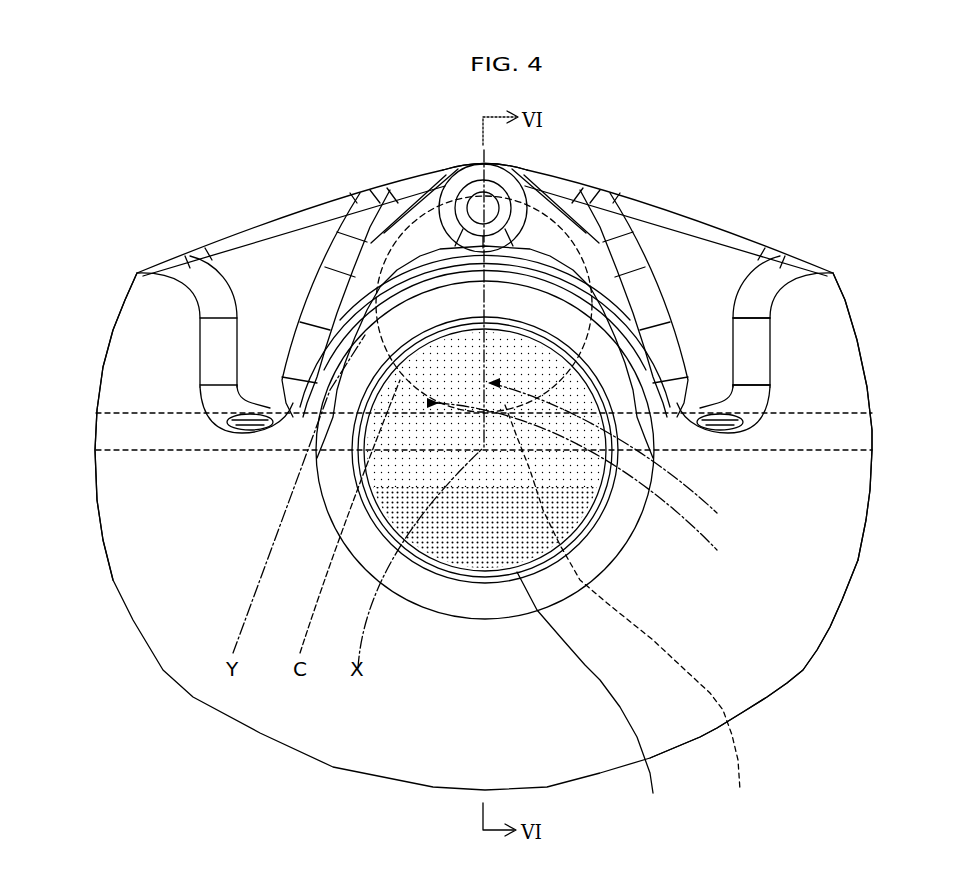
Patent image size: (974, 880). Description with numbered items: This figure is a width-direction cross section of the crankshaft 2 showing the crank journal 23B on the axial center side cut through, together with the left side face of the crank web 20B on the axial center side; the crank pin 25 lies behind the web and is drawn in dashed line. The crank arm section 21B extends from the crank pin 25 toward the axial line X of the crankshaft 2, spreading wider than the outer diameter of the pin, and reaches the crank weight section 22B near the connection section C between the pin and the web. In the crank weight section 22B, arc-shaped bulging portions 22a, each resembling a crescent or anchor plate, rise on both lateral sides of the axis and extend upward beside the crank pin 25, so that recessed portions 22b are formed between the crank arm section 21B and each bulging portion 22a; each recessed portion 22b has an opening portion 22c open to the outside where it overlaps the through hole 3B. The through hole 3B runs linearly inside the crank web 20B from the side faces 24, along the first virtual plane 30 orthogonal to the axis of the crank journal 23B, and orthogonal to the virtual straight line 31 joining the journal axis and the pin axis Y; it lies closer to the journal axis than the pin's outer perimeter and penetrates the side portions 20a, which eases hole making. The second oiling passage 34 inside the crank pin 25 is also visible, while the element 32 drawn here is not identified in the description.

The crankshaft 2 is at (600, 170).
The through hole 3B is at (517, 439).
The crank web 20B is at (245, 511).
The side portions 20a is at (868, 513).
The crank arm section 21B is at (653, 283).
The crank weight section 22B is at (193, 697).
The bulging portions 22a is at (843, 292).
The recessed portions 22b is at (710, 382).
The opening portion 22c is at (833, 398).
The crank journal 23B is at (599, 703).
The side faces 24 is at (95, 458).
The crank pin 25 is at (628, 609).
The first virtual plane 30 is at (423, 332).
The virtual straight line 31 is at (615, 452).
The rotation direction line 32 is at (585, 481).
The second oiling passage 34 is at (480, 200).